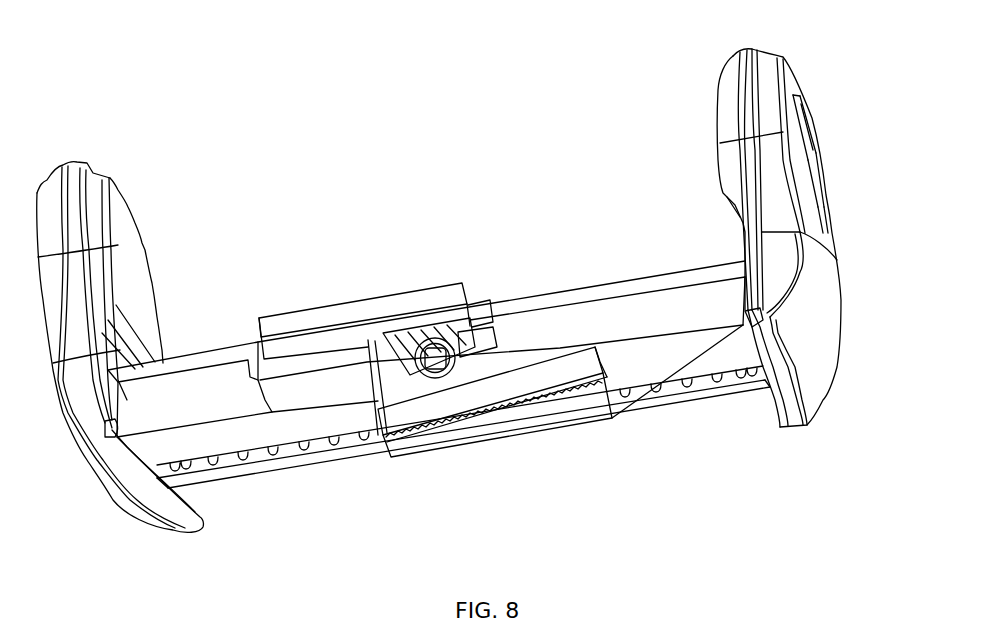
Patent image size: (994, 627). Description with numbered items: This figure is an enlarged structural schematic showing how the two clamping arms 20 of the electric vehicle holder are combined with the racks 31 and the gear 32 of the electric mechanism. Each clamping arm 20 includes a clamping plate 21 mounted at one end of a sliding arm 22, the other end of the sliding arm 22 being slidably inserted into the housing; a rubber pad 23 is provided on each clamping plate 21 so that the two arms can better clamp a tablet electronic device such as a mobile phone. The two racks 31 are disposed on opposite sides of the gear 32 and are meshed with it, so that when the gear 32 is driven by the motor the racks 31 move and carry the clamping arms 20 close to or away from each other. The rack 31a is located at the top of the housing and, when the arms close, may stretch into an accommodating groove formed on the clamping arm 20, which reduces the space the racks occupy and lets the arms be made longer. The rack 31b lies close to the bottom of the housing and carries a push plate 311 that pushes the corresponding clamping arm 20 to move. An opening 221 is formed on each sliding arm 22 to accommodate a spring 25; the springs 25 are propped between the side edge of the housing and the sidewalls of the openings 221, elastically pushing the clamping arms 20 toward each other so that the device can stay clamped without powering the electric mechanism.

The clamping arm 20 is at (146, 532).
The clamping plate 21 is at (57, 167).
The sliding arm 22 is at (223, 355).
The opening 221 is at (738, 383).
The rubber pad 23 is at (127, 237).
The spring 25 is at (657, 392).
The rack 31 is at (533, 142).
The rack 31a is at (362, 313).
The rack 31b is at (557, 360).
The push plate 311 is at (371, 368).
The gear 32 is at (440, 372).